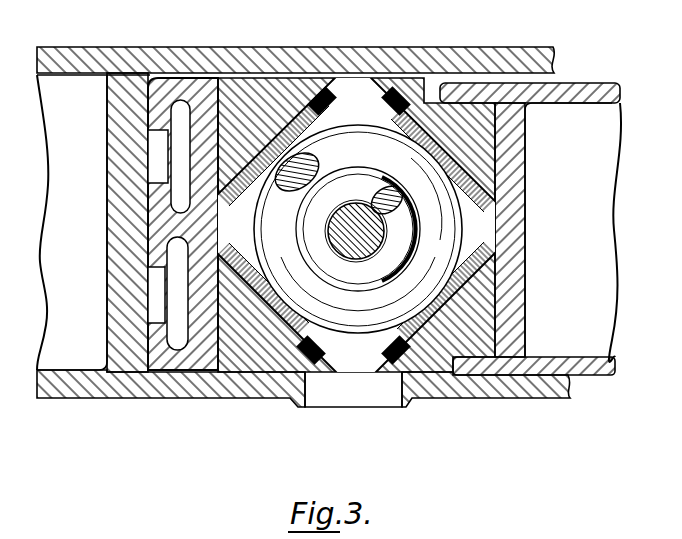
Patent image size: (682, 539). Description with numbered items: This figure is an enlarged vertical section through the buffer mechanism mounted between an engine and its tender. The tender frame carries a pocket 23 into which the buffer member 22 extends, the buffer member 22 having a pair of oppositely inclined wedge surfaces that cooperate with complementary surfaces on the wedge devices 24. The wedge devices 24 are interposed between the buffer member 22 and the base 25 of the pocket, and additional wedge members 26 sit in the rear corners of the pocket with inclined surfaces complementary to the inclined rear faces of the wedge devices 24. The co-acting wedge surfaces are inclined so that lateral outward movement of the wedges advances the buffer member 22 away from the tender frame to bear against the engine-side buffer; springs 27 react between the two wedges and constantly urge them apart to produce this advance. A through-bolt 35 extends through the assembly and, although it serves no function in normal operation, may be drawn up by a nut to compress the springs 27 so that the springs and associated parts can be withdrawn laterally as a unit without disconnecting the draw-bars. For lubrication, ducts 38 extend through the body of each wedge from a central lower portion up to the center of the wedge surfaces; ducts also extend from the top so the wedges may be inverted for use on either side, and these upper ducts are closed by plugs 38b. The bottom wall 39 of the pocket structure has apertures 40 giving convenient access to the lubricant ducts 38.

The buffer member 22 is at (613, 58).
The pocket 23 is at (360, 63).
The wedge devices 24 is at (268, 90).
The base 25 is at (150, 157).
The additional wedge members 26 is at (185, 84).
The springs 27 is at (332, 240).
The through-bolt 35 is at (357, 207).
The lubricant ducts 38 is at (400, 98).
The plugs 38b is at (333, 96).
The bottom wall 39 is at (222, 398).
The apertures 40 is at (377, 402).